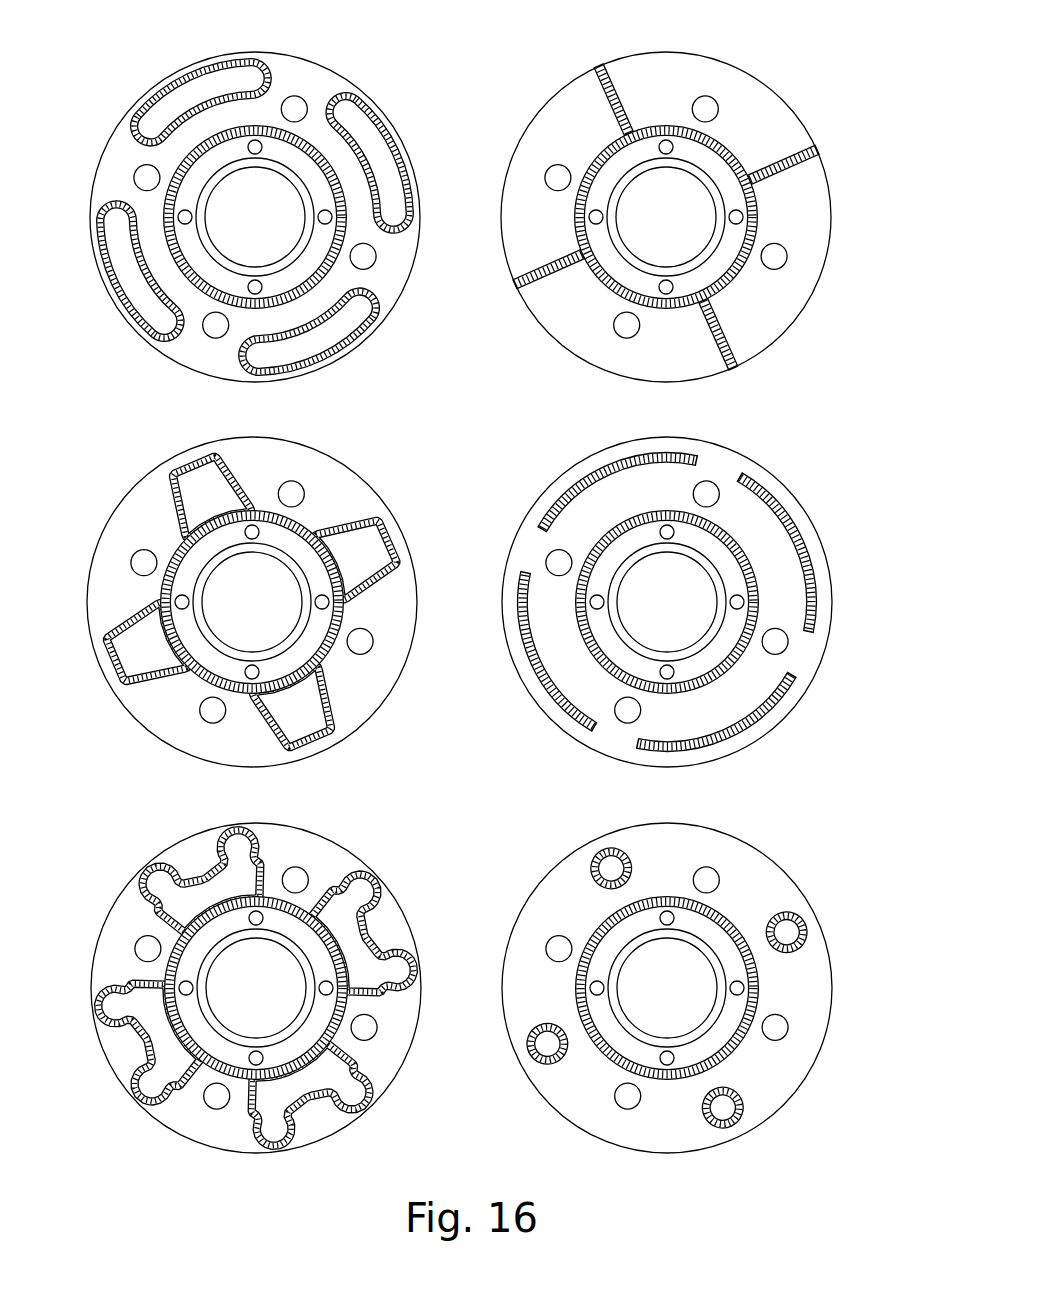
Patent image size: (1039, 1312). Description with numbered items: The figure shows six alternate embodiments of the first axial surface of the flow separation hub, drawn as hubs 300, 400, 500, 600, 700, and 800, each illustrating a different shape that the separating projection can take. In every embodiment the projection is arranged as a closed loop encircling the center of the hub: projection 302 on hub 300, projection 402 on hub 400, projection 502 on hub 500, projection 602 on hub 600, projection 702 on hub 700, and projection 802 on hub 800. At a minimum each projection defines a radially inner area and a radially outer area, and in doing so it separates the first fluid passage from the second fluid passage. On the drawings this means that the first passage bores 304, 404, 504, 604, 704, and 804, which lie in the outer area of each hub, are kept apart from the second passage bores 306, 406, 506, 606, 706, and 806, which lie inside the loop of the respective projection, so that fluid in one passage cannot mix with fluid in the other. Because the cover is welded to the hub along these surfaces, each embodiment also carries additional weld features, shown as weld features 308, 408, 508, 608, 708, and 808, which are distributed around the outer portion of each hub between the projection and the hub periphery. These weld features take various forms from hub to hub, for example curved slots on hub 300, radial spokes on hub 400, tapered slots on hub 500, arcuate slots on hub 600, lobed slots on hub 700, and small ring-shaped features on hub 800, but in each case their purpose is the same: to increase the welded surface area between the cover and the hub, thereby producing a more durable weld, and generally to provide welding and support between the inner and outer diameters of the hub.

The hub 300 is at (105, 152).
The projection 302 is at (241, 124).
The first passage bore 304 is at (292, 98).
The second passage bore 306 is at (325, 210).
The weld feature 308 is at (348, 348).
The hub 400 is at (723, 63).
The projection 402 is at (601, 152).
The first passage bore 404 is at (776, 258).
The second passage bore 406 is at (742, 218).
The weld feature 408 is at (733, 342).
The hub 500 is at (130, 482).
The projection 502 is at (337, 648).
The first passage bore 504 is at (143, 560).
The second passage bore 506 is at (182, 603).
The weld feature 508 is at (387, 513).
The hub 600 is at (551, 491).
The projection 602 is at (720, 528).
The first passage bore 604 is at (774, 648).
The second passage bore 606 is at (744, 605).
The weld feature 608 is at (780, 500).
The hub 700 is at (134, 879).
The projection 702 is at (297, 875).
The first passage bore 704 is at (145, 945).
The second passage bore 706 is at (182, 988).
The weld feature 708 is at (232, 1112).
The hub 800 is at (550, 880).
The projection 802 is at (758, 988).
The first passage bore 804 is at (706, 880).
The second passage bore 806 is at (736, 990).
The weld feature 808 is at (616, 852).